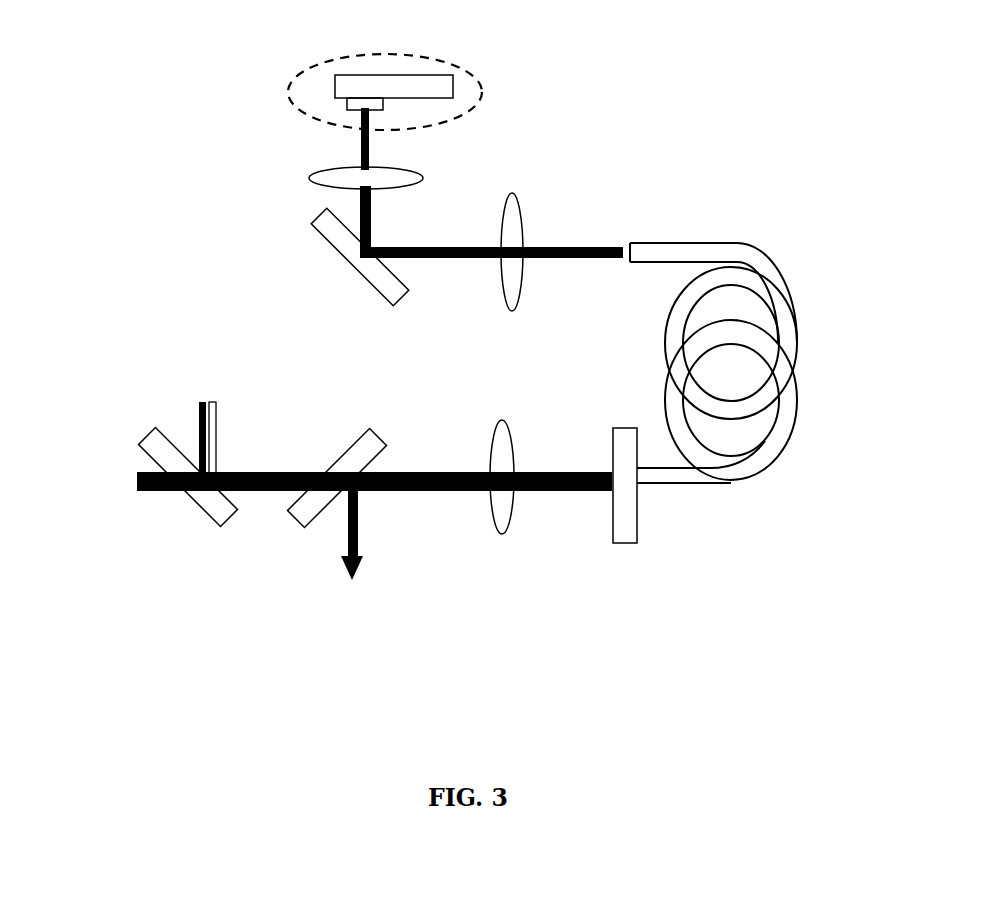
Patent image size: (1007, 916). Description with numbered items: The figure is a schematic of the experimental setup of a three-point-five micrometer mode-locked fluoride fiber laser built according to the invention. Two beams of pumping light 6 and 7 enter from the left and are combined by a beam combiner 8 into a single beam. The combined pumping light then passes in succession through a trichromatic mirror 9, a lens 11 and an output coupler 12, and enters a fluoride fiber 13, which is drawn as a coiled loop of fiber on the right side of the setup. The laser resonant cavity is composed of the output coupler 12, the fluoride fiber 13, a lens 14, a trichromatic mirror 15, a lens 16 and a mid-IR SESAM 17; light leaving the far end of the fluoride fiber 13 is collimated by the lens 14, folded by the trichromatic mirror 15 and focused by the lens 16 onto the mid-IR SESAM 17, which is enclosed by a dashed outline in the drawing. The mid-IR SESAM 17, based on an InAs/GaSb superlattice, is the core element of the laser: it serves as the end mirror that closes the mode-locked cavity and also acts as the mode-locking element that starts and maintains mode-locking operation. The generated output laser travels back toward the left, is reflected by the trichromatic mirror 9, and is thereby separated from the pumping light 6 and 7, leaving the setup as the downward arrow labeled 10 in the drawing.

The pumping light 6 is at (90, 522).
The pumping light 7 is at (179, 388).
The beam combiner 8 is at (188, 525).
The trichromatic mirror 9 is at (317, 529).
The output beam 10 is at (369, 573).
The lens 11 is at (483, 524).
The output coupler 12 is at (607, 534).
The fluoride fiber 13 is at (782, 363).
The lens 14 is at (578, 228).
The trichromatic mirror 15 is at (328, 257).
The lens 16 is at (305, 153).
The mid-IR SESAM 17 is at (448, 72).